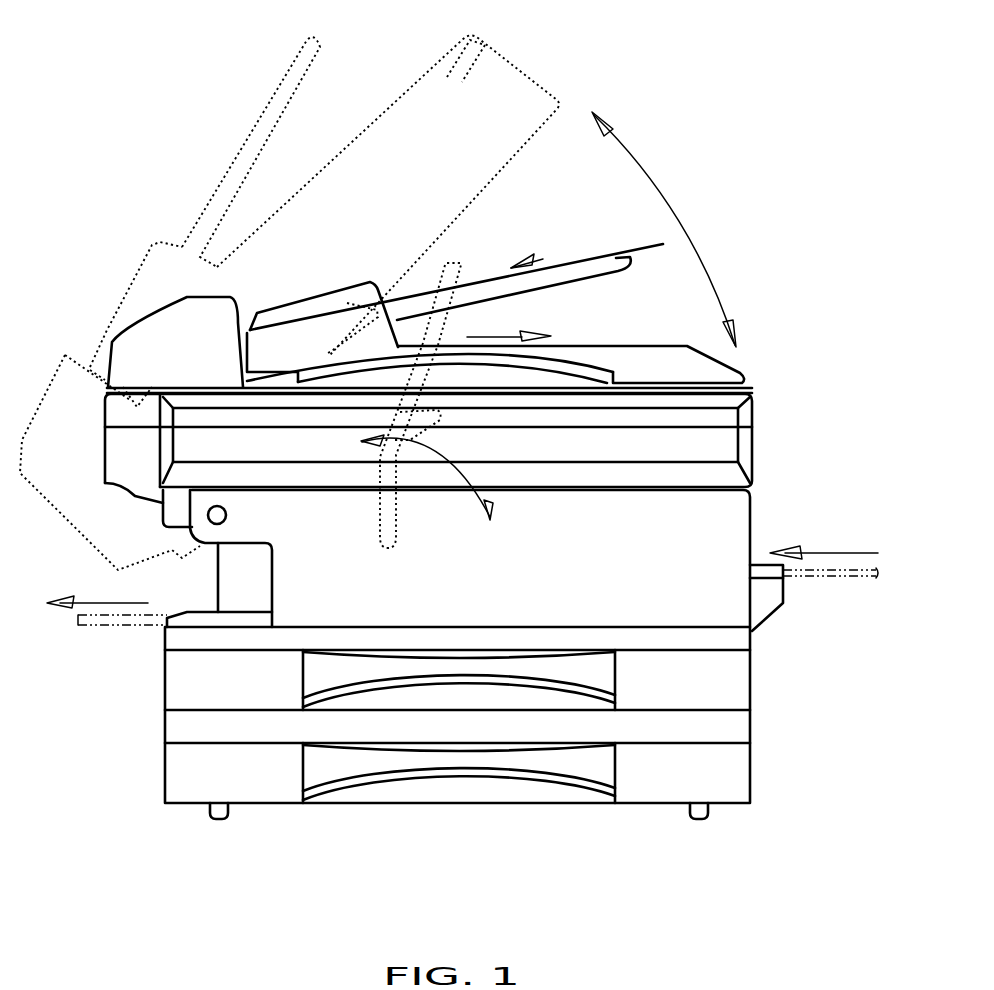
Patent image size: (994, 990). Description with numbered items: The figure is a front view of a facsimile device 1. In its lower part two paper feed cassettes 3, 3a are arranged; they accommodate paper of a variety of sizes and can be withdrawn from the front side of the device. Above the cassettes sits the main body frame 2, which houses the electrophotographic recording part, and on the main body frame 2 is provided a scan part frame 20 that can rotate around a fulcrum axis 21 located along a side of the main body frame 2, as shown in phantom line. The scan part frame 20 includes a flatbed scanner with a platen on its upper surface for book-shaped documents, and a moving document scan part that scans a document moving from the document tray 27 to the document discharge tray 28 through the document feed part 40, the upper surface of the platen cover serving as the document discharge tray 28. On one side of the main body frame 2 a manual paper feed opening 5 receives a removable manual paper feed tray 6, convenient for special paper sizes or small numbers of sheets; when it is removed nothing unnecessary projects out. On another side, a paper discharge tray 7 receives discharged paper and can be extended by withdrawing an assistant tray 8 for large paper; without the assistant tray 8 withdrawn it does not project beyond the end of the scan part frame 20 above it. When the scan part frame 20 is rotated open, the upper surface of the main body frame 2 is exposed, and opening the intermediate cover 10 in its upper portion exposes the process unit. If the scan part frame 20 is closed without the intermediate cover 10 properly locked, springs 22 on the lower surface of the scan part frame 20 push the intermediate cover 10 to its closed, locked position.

The facsimile device 1 is at (665, 117).
The main body frame 2 is at (484, 581).
The paper feed cassette 3 is at (742, 683).
The paper feed cassette 3a is at (742, 780).
The manual paper feed opening 5 is at (759, 554).
The manual paper feed tray 6 is at (836, 578).
The paper discharge tray 7 is at (185, 611).
The assistant tray 8 is at (113, 630).
The intermediate cover 10 is at (447, 263).
The scan part frame 20 is at (652, 342).
The fulcrum axis 21 is at (226, 517).
The springs 22 is at (350, 307).
The document tray 27 is at (497, 283).
The document discharge tray 28 is at (578, 352).
The document feed part 40 is at (147, 316).